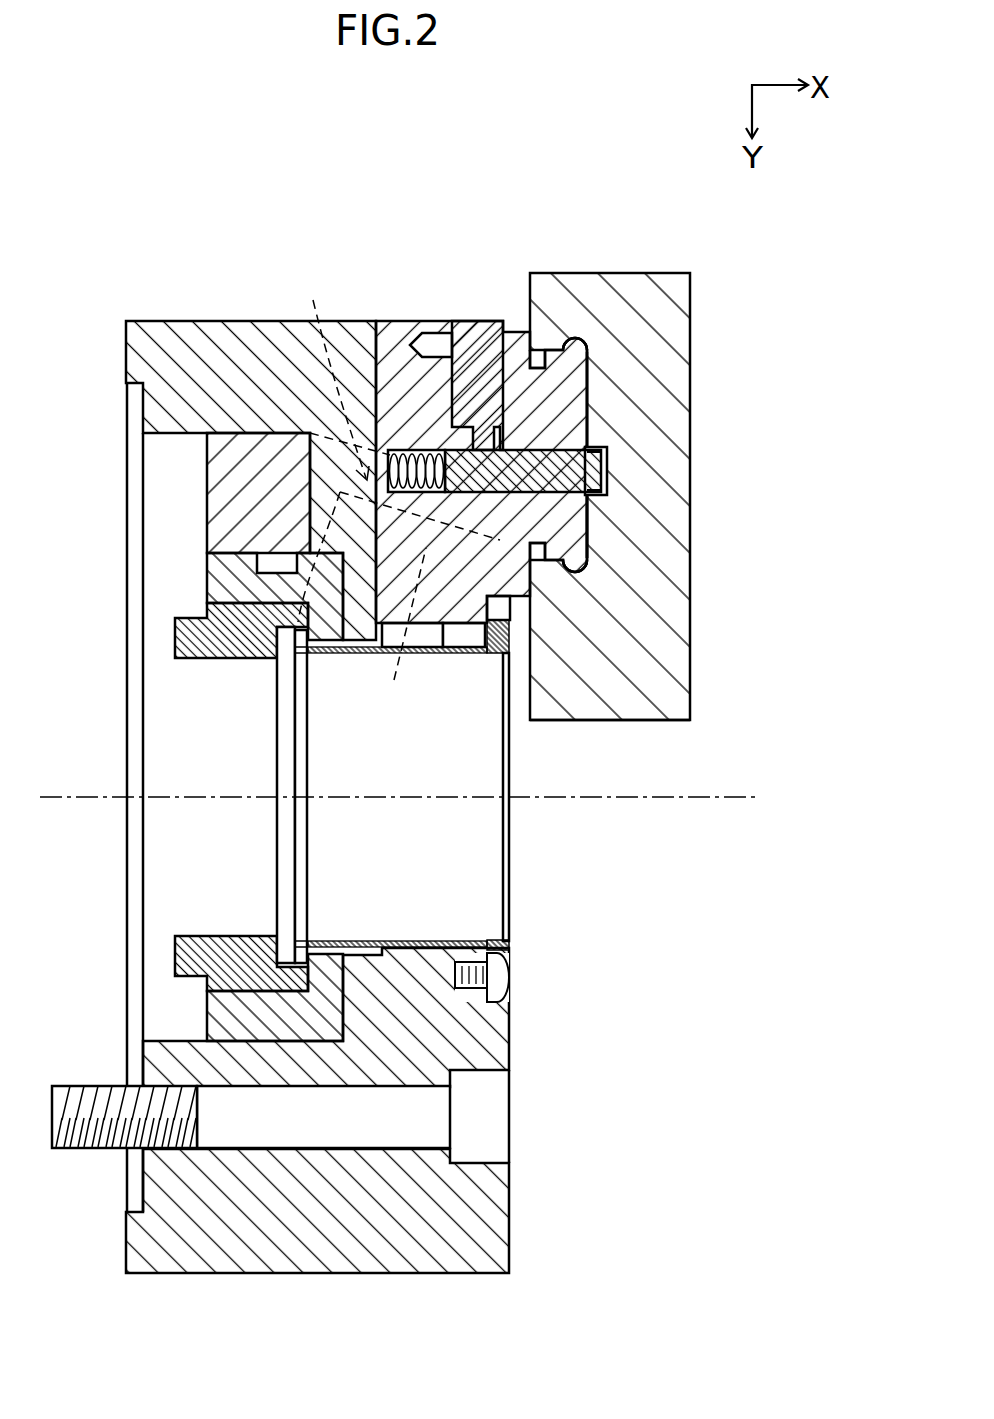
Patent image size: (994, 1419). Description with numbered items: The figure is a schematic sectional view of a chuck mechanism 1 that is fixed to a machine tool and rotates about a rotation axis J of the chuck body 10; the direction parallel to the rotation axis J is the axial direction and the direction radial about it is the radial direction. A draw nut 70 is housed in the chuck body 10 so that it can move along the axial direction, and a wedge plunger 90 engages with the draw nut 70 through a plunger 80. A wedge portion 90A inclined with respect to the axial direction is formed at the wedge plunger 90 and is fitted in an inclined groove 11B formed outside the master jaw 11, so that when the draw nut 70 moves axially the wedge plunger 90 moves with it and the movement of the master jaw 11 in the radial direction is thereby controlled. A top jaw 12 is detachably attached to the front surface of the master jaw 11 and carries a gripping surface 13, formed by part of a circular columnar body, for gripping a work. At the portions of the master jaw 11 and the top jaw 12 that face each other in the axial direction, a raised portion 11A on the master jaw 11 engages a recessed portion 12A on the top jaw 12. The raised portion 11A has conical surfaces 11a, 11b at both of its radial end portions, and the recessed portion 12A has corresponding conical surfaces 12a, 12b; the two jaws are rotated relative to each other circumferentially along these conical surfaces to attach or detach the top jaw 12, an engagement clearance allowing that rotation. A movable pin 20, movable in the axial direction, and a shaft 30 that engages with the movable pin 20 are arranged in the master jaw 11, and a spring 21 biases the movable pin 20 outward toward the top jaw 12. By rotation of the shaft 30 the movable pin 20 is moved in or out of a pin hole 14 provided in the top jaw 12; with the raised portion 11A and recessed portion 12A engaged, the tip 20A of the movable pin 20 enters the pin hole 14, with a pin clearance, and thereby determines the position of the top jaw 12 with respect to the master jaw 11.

The chuck mechanism 1 is at (635, 128).
The chuck body 10 is at (186, 345).
The master jaw 11 is at (385, 345).
The raised portion 11A is at (552, 393).
The inclined groove 11B is at (395, 637).
The conical surface 11a is at (545, 550).
The conical surface 11b is at (542, 359).
The top jaw 12 is at (642, 292).
The recessed portion 12A is at (584, 508).
The conical surface 12a is at (563, 557).
The conical surface 12b is at (556, 360).
The gripping surface 13 is at (645, 722).
The pin hole 14 is at (607, 470).
The movable pin 20 is at (560, 455).
The movable pin tip 20A is at (603, 466).
The spring 21 is at (438, 492).
The shaft 30 is at (475, 372).
The draw nut 70 is at (188, 642).
The plunger 80 is at (235, 580).
The wedge plunger 90 is at (256, 450).
The wedge portion 90A is at (394, 443).
The rotation axis J is at (665, 799).